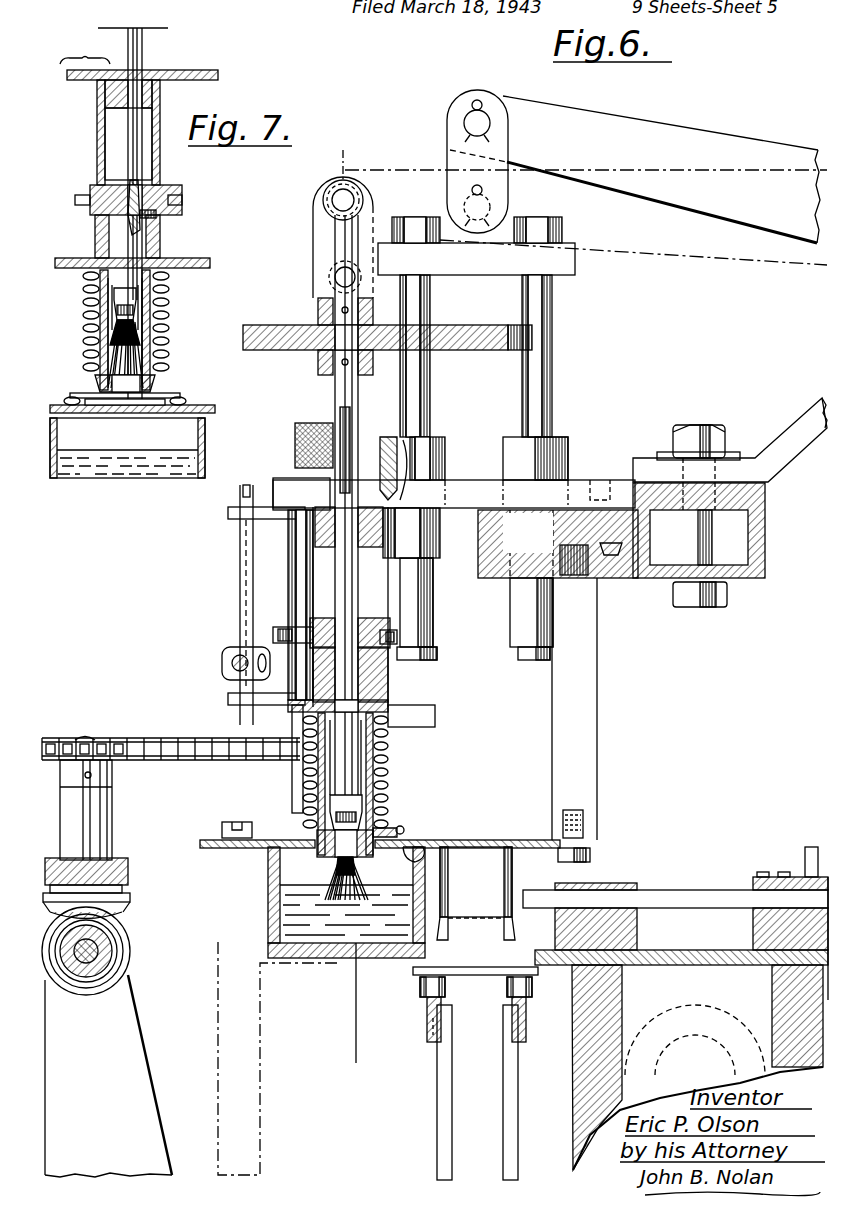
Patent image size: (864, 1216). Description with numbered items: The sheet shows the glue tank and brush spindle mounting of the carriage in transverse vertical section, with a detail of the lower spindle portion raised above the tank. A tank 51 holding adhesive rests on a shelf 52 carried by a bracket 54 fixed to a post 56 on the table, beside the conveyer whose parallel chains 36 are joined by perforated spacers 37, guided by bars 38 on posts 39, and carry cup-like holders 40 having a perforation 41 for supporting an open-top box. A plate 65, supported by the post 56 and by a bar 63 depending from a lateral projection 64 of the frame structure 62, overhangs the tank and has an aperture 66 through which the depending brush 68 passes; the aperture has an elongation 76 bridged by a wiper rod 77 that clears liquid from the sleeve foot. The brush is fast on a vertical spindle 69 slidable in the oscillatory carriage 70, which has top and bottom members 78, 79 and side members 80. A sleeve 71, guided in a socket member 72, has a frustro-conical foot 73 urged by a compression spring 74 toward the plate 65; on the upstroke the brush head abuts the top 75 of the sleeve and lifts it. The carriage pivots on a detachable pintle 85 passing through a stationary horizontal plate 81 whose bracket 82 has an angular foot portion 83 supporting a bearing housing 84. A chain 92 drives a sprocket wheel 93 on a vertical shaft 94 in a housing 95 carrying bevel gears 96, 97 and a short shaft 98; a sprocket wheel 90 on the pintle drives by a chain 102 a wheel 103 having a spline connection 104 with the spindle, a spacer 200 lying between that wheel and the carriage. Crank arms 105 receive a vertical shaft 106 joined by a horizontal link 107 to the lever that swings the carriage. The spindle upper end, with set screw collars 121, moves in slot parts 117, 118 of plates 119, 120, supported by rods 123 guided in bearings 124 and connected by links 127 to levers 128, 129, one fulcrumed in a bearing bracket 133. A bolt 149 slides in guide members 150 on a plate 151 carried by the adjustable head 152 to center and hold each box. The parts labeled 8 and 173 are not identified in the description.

In FIG. 6, the axis line of spray unit 8 is at (582, 608).
In FIG. 6, the conveyer chains 36 is at (530, 990).
In FIG. 6, the perforated spacers 37 is at (418, 972).
In FIG. 6, the parallel bars 38 is at (427, 1032).
In FIG. 6, the posts 39 is at (510, 1169).
In FIG. 6, the holders 40 is at (520, 946).
In FIG. 6, the perforation 41 is at (478, 976).
In FIG. 7, the tank 51 is at (127, 448).
In FIG. 6, the tank 51 is at (268, 875).
In FIG. 6, the shelf 52 is at (257, 953).
In FIG. 6, the bracket 54 is at (303, 966).
In FIG. 6, the post 56 is at (208, 1032).
In FIG. 6, the frame structure 62 is at (766, 578).
In FIG. 6, the bar 63 is at (583, 770).
In FIG. 6, the lateral projection 64 is at (610, 580).
In FIG. 7, the plate 65 is at (197, 405).
In FIG. 6, the plate 65 is at (212, 840).
In FIG. 7, the aperture 66 is at (148, 413).
In FIG. 6, the aperture 66 is at (285, 840).
In FIG. 7, the brush 68 is at (140, 332).
In FIG. 6, the brush 68 is at (320, 870).
In FIG. 7, the spindle 69 is at (142, 40).
In FIG. 6, the spindle 69 is at (333, 392).
In FIG. 7, the carriage 70 is at (85, 48).
In FIG. 6, the carriage 70 is at (301, 494).
In FIG. 7, the sleeve 71 is at (100, 342).
In FIG. 6, the sleeve 71 is at (362, 812).
In FIG. 7, the socket member 72 is at (100, 320).
In FIG. 6, the socket member 72 is at (362, 762).
In FIG. 7, the foot 73 is at (162, 380).
In FIG. 6, the foot 73 is at (317, 845).
In FIG. 7, the compression spring 74 is at (82, 302).
In FIG. 6, the compression spring 74 is at (303, 777).
In FIG. 7, the top of sleeve 75 is at (170, 270).
In FIG. 6, the top of sleeve 75 is at (373, 740).
In FIG. 6, the elongation 76 is at (415, 850).
In FIG. 7, the wiper rod 77 is at (82, 394).
In FIG. 6, the wiper rod 77 is at (400, 828).
In FIG. 7, the top member 78 is at (200, 70).
In FIG. 6, the top member 78 is at (310, 512).
In FIG. 7, the bottom member 79 is at (205, 260).
In FIG. 6, the bottom member 79 is at (390, 705).
In FIG. 6, the side members 80 is at (288, 573).
In FIG. 6, the horizontal plate 81 is at (454, 494).
In FIG. 6, the depending bracket 82 is at (398, 676).
In FIG. 6, the foot portion 83 is at (445, 722).
In FIG. 6, the bearing housing 84 is at (288, 798).
In FIG. 6, the pintle 85 is at (300, 423).
In FIG. 6, the sprocket wheel 90 is at (273, 636).
In FIG. 6, the chain 92 is at (160, 727).
In FIG. 6, the sprocket wheel 93 is at (98, 745).
In FIG. 6, the vertical shaft 94 is at (86, 738).
In FIG. 6, the housing 95 is at (128, 866).
In FIG. 6, the bevel gear 96 is at (130, 898).
In FIG. 6, the bevel gear 97 is at (126, 940).
In FIG. 6, the short shaft 98 is at (120, 968).
In FIG. 6, the chain 102 is at (280, 630).
In FIG. 7, the sprocket wheel 103 is at (85, 188).
In FIG. 6, the sprocket wheel 103 is at (392, 636).
In FIG. 7, the spline connection 104 is at (142, 184).
In FIG. 6, the spline connection 104 is at (345, 577).
In FIG. 6, the crank arms 105 is at (228, 512).
In FIG. 6, the vertical shaft 106 is at (238, 492).
In FIG. 6, the horizontal link 107 is at (222, 660).
In FIG. 6, the slot part 117 is at (405, 336).
In FIG. 6, the slot part 118 is at (470, 262).
In FIG. 6, the plate 119 is at (532, 338).
In FIG. 6, the plate 120 is at (573, 252).
In FIG. 6, the set screw collars 121 is at (326, 358).
In FIG. 6, the depending rods 123 is at (417, 300).
In FIG. 6, the vertical bearings 124 is at (503, 466).
In FIG. 6, the links 127 is at (462, 88).
In FIG. 6, the lever 128 is at (652, 166).
In FIG. 6, the lever 129 is at (742, 135).
In FIG. 6, the bearing bracket 133 is at (815, 420).
In FIG. 6, the bolt 149 is at (692, 890).
In FIG. 6, the guide members 150 is at (752, 910).
In FIG. 6, the plate 151 is at (708, 967).
In FIG. 6, the adjustable head 152 is at (603, 1078).
In FIG. 6, the pin 173 is at (815, 822).
In FIG. 7, the spacer 200 is at (97, 136).
In FIG. 6, the spacer 200 is at (367, 598).